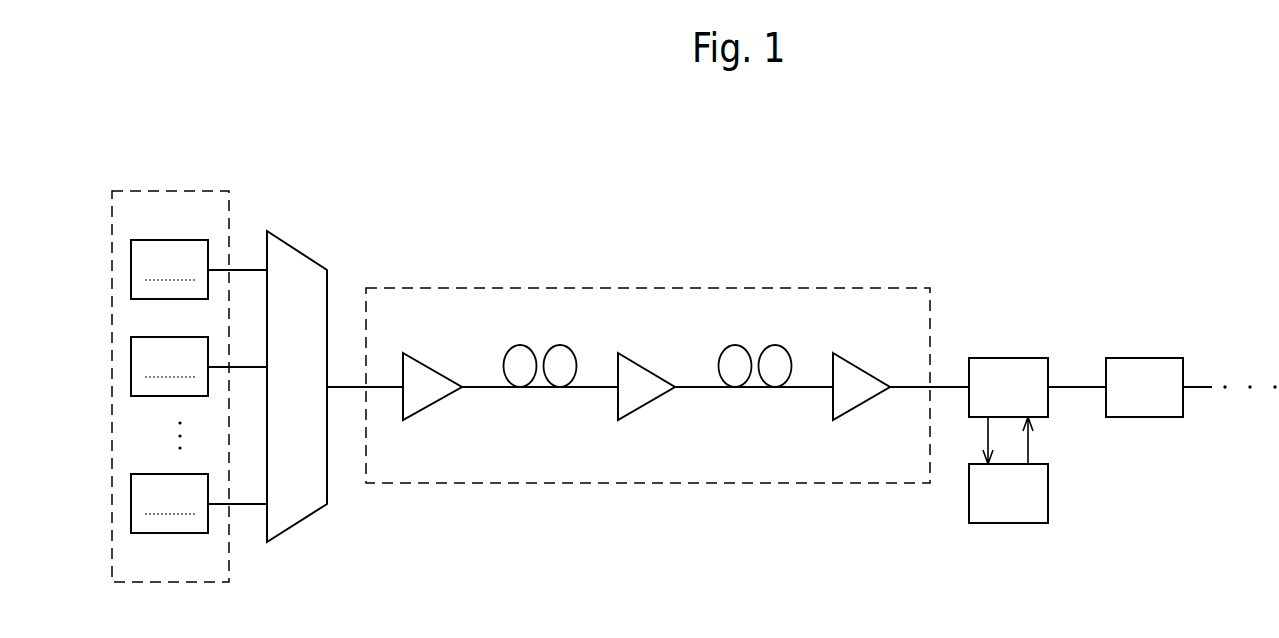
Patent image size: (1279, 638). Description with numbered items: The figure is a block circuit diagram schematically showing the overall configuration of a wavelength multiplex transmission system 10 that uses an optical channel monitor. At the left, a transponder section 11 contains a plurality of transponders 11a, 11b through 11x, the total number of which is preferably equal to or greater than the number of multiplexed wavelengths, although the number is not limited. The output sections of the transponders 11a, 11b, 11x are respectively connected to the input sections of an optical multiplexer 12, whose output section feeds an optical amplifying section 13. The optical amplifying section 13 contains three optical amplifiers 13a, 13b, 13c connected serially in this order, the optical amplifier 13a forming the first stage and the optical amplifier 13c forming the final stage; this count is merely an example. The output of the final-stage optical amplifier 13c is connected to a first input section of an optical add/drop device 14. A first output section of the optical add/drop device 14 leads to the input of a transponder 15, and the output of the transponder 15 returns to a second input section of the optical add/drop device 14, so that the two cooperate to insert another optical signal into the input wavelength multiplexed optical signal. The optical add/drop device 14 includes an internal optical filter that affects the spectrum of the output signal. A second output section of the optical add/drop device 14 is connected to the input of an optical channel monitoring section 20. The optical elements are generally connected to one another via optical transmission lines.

The wavelength multiplex transmission system 10 is at (1030, 190).
The transponder section 11 is at (189, 349).
The transponder 11a is at (199, 269).
The transponder 11b is at (199, 366).
The transponder 11x is at (199, 503).
The optical multiplexer 12 is at (297, 248).
The optical amplifying section 13 is at (648, 348).
The optical amplifier 13a is at (430, 372).
The optical amplifier 13b is at (645, 372).
The optical amplifier 13c is at (860, 372).
The optical add/drop device 14 is at (1008, 358).
The transponder 15 is at (1008, 523).
The optical channel monitoring section 20 is at (1145, 358).